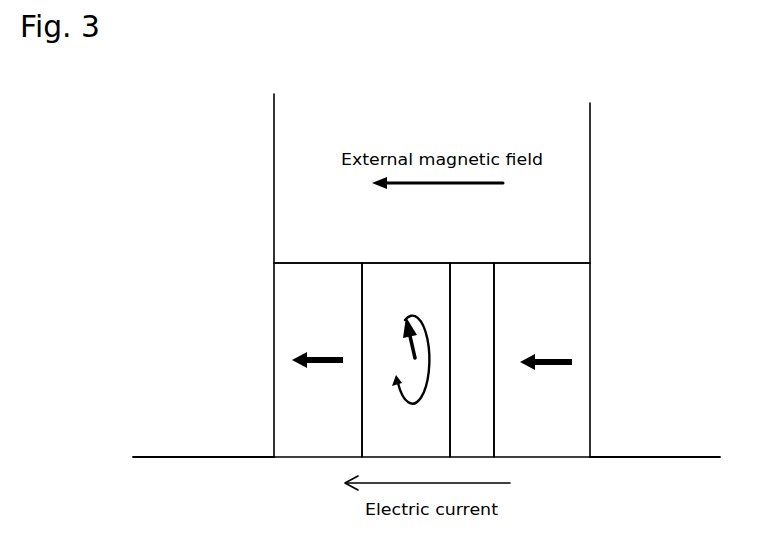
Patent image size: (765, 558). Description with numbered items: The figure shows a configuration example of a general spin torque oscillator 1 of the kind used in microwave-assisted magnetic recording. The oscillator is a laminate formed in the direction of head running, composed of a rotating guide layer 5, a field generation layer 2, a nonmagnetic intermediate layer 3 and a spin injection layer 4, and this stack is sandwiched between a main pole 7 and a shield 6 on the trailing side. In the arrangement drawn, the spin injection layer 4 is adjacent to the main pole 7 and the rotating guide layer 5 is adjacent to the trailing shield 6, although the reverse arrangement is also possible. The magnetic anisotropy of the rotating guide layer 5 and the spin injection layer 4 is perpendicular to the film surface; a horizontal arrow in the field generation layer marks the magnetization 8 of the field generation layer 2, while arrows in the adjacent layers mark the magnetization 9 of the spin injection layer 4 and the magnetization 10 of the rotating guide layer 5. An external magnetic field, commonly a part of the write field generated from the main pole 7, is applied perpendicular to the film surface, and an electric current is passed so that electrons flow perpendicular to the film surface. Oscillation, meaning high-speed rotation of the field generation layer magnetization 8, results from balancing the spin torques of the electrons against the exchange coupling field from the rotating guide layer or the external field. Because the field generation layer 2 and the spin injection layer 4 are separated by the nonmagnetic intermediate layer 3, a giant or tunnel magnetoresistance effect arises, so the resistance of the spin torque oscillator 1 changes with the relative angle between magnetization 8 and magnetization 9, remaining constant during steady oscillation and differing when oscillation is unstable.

The spin torque oscillator 1 is at (587, 253).
The field generation layer 2 is at (380, 422).
The nonmagnetic intermediate layer 3 is at (475, 422).
The spin injection layer 4 is at (565, 422).
The rotating guide layer 5 is at (310, 420).
The shield 6 is at (230, 422).
The main pole 7 is at (645, 422).
The field generation layer magnetization 8 is at (421, 367).
The magnetization of spin injection layer 9 is at (555, 350).
The magnetization of rotating guide layer 10 is at (313, 349).